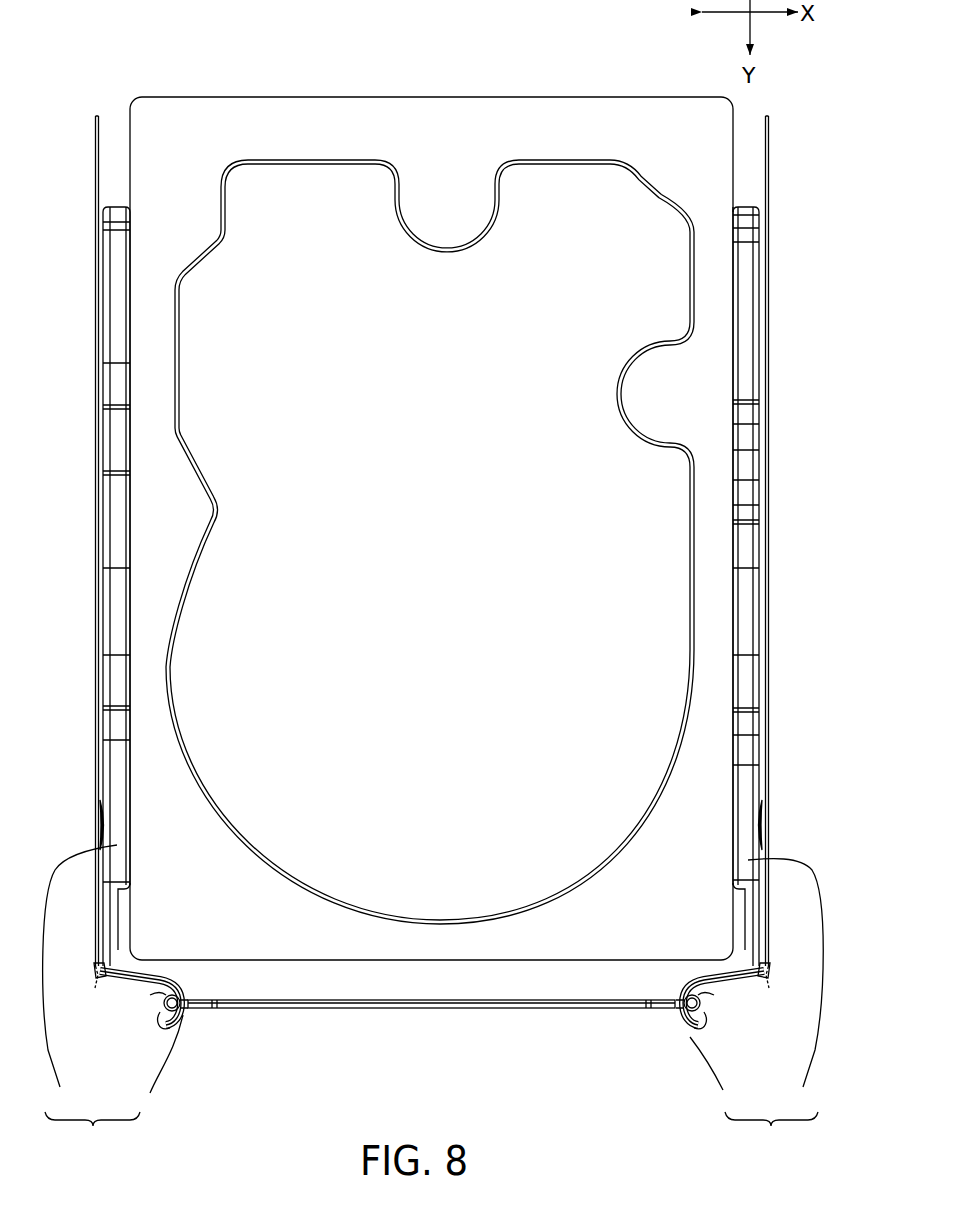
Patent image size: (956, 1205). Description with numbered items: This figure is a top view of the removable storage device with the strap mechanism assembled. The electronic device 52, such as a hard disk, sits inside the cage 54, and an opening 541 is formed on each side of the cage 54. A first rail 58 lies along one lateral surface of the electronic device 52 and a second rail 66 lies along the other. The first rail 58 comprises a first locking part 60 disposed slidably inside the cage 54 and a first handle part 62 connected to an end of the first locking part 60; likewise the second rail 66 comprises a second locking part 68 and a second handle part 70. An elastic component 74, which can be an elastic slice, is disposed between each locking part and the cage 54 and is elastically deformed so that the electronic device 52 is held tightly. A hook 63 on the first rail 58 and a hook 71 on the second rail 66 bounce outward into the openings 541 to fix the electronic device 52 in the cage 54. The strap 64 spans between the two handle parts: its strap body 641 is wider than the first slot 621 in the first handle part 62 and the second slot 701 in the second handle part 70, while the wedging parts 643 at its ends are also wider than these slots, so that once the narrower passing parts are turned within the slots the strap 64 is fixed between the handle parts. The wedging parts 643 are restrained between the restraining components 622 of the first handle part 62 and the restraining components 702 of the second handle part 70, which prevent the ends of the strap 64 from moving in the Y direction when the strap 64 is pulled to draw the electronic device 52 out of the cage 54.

The electronic device 52 is at (467, 113).
The cage 54 is at (95, 162).
The opening 541 is at (92, 947).
The first rail 58 is at (113, 1001).
The first locking part 60 is at (91, 661).
The first handle part 62 is at (140, 1043).
The hook 63 is at (102, 972).
The first slot 621 is at (158, 1006).
The restraining components 622 is at (153, 997).
The strap 64 is at (432, 1052).
The strap body 641 is at (385, 1003).
The wedging part 643 is at (183, 1014).
The second rail 66 is at (756, 1008).
The second locking part 68 is at (790, 615).
The second handle part 70 is at (723, 661).
The hook 71 is at (766, 972).
The second slot 701 is at (706, 1006).
The restraining components 702 is at (711, 997).
The elastic component 74 is at (99, 827).